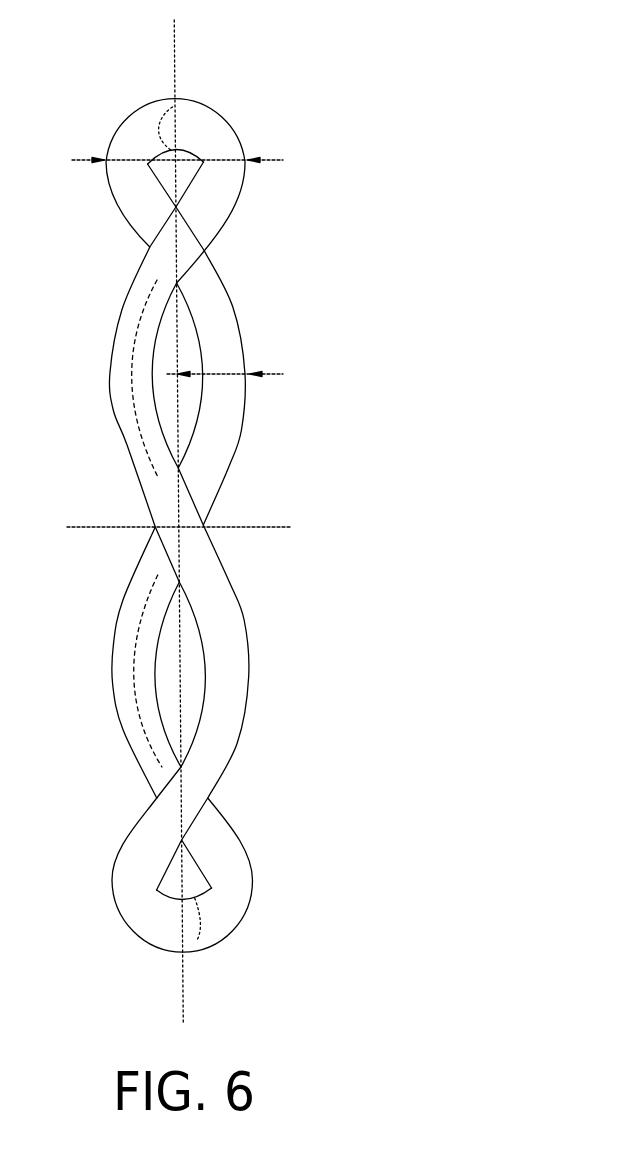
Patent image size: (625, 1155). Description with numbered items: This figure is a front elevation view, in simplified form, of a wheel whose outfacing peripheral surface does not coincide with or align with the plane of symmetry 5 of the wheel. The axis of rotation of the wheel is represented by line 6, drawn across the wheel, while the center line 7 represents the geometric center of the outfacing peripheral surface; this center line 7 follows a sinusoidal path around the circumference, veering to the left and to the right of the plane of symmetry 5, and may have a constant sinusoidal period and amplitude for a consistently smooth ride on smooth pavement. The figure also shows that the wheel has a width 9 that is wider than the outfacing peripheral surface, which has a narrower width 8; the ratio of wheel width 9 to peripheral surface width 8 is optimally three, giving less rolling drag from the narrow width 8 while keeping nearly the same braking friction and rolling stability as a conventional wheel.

The plane of symmetry 5 is at (176, 58).
The axis of rotation 6 is at (85, 527).
The center line 7 is at (132, 364).
The width of outfacing peripheral surface 8 is at (228, 373).
The wheel width 9 is at (215, 160).